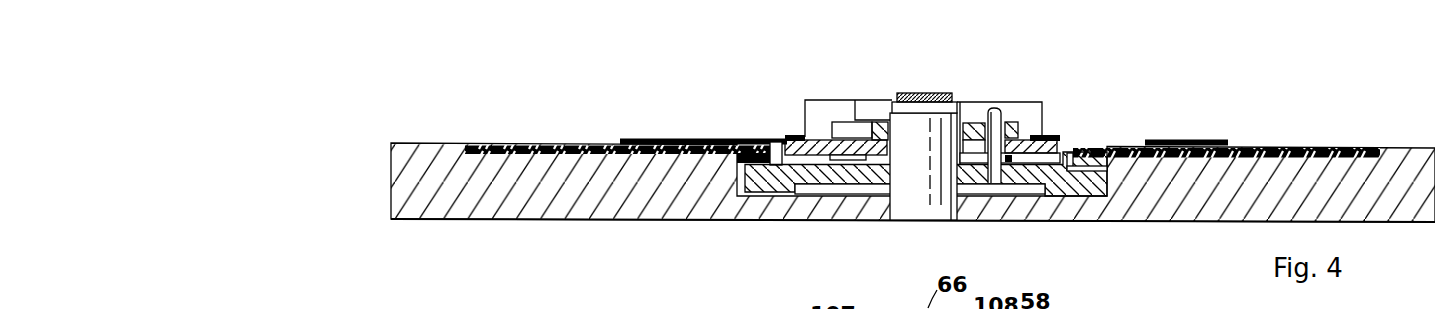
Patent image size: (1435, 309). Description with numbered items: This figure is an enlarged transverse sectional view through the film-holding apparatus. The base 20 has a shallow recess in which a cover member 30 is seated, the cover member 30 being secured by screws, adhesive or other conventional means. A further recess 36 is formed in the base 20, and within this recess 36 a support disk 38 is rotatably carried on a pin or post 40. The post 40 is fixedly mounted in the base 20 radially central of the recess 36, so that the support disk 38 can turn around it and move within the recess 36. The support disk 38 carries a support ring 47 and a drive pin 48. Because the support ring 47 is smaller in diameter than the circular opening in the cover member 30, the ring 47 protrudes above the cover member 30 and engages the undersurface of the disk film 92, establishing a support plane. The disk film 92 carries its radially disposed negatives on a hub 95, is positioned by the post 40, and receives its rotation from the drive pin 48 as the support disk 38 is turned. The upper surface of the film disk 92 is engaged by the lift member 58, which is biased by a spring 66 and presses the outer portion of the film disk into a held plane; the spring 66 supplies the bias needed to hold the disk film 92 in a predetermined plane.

The base 20 is at (433, 158).
The cover member 30 is at (550, 145).
The recess 36 is at (713, 222).
The support disk 38 is at (1038, 177).
The pin or post 40 is at (925, 203).
The support ring 47 is at (1072, 140).
The drive pin 48 is at (993, 108).
The lift member 58 is at (863, 105).
The spring 66 is at (920, 93).
The disk film 92 is at (682, 138).
The hub 95 is at (823, 140).